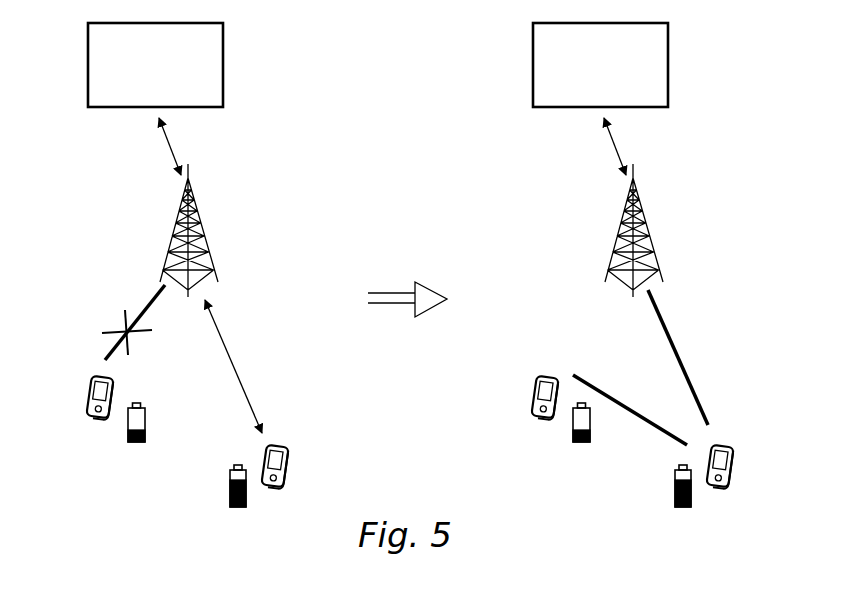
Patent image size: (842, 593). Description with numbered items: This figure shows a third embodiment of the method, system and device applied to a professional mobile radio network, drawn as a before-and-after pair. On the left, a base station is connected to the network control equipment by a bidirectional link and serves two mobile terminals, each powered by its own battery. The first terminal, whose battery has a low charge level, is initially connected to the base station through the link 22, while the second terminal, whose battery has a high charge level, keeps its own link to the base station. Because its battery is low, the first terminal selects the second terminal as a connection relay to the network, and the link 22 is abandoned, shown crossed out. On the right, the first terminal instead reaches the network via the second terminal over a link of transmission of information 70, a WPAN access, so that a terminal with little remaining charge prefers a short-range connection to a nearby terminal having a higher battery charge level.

The link of transmission of information 22 is at (150, 302).
The link of transmission of information 70 is at (620, 402).